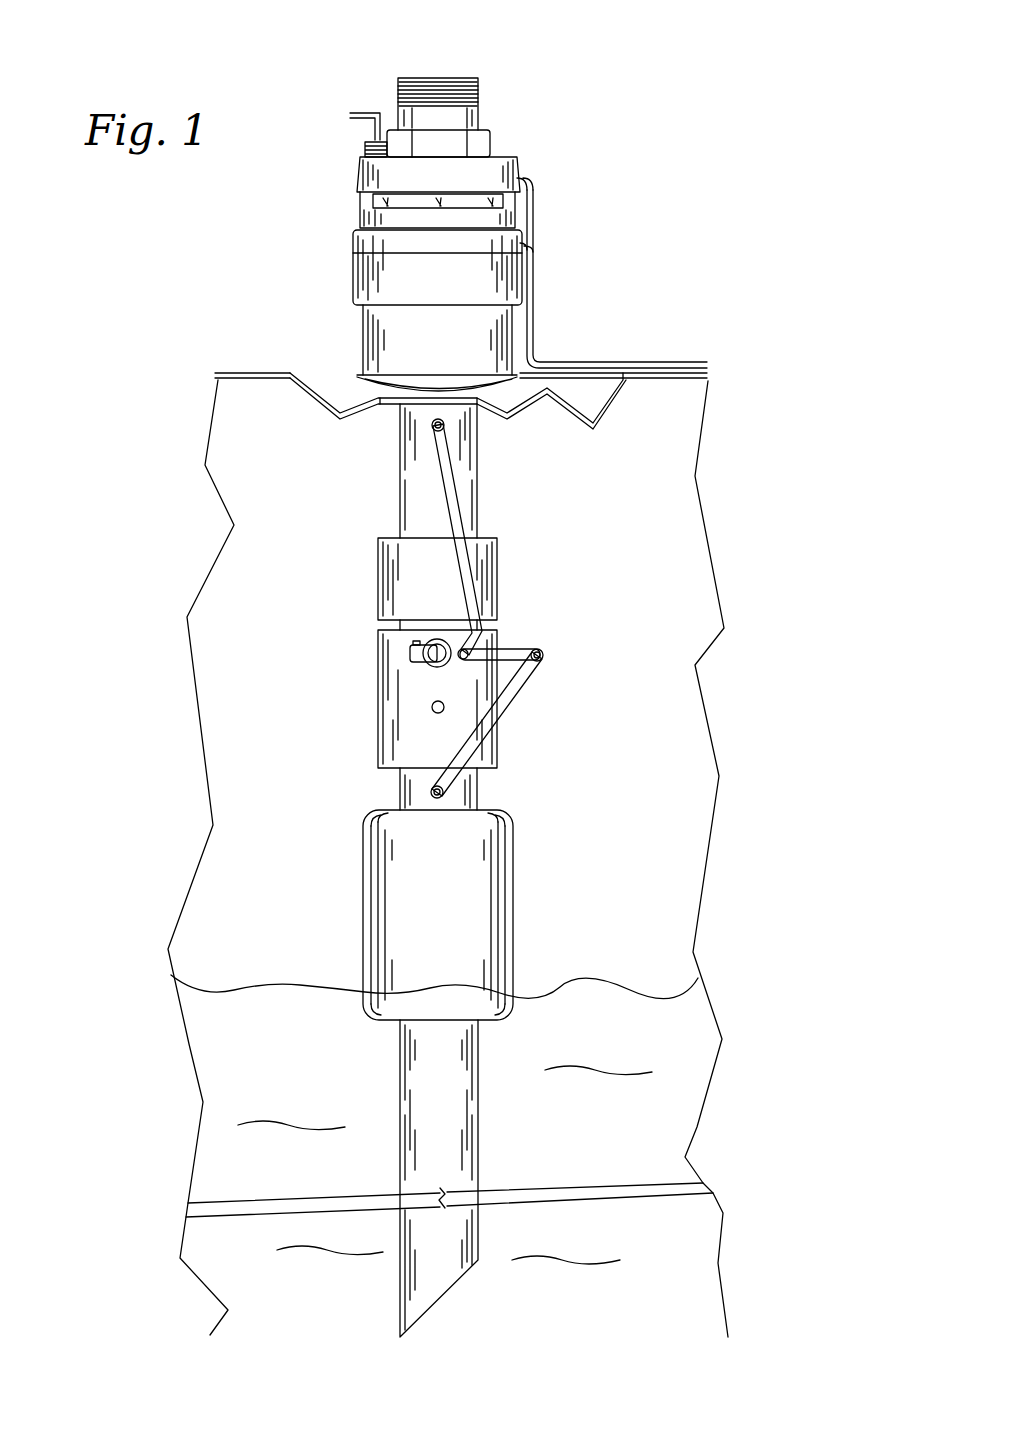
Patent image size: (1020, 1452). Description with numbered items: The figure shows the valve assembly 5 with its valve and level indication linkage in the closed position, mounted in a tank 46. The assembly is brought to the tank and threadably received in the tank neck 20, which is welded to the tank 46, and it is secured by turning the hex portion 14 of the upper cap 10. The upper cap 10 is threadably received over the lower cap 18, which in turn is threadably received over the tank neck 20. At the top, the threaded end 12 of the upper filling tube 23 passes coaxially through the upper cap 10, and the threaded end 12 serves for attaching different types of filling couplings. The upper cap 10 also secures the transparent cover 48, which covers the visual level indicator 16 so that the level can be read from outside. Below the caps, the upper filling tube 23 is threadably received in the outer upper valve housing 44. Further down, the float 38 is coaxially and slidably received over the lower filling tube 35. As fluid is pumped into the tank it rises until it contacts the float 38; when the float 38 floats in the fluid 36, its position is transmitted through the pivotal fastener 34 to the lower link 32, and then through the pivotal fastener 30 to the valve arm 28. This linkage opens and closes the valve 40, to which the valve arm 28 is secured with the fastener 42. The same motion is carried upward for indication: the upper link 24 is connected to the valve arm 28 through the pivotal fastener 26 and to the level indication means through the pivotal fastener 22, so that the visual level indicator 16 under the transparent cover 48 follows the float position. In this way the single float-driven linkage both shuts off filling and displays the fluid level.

The valve assembly 5 is at (444, 166).
The upper cap 10 is at (375, 143).
The threaded end 12 is at (442, 74).
The hex portion 14 is at (493, 143).
The visual level indicator 16 is at (527, 188).
The lower cap 18 is at (520, 288).
The tank neck 20 is at (513, 345).
The pivotal fastener 22 is at (568, 362).
The upper filling tube 23 is at (482, 466).
The upper link 24 is at (480, 523).
The pivotal fastener 26 is at (498, 638).
The valve arm 28 is at (470, 652).
The pivotal fastener 30 is at (543, 657).
The lower link 32 is at (512, 700).
The pivotal fastener 34 is at (444, 795).
The lower filling tube 35 is at (400, 1180).
The fluid 36 is at (236, 990).
The float 38 is at (363, 885).
The valve 40 is at (410, 664).
The fastener 42 is at (410, 641).
The outer upper valve housing 44 is at (378, 590).
The tank 46 is at (300, 368).
The transparent cover 48 is at (372, 216).